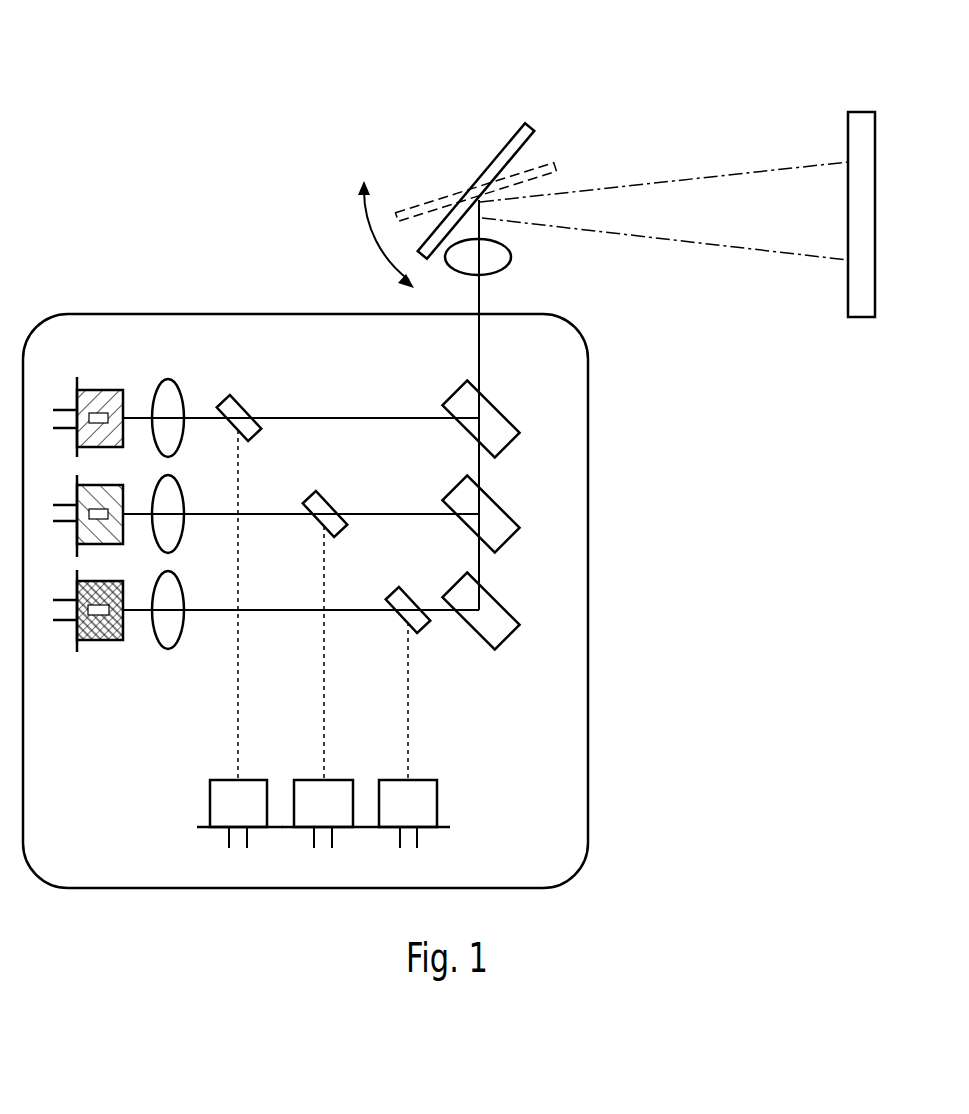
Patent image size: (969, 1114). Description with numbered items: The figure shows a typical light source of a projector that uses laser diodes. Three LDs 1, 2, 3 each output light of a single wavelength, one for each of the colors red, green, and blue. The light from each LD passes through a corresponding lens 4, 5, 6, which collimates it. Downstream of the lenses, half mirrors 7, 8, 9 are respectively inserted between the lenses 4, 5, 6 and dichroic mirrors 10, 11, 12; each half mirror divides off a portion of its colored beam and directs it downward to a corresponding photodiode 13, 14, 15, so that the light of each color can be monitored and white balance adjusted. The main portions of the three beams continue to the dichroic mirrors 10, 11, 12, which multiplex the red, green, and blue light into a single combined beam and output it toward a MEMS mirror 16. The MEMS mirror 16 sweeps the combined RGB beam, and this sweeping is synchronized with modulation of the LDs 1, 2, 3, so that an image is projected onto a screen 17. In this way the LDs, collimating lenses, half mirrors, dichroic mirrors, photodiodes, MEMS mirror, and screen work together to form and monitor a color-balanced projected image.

The LD 1 is at (113, 390).
The LD 2 is at (113, 486).
The LD 3 is at (113, 581).
The lens 4 is at (182, 395).
The lens 5 is at (182, 491).
The lens 6 is at (182, 585).
The half mirror 7 is at (243, 402).
The half mirror 8 is at (328, 502).
The half mirror 9 is at (412, 598).
The dichroic mirror 10 is at (512, 383).
The dichroic mirror 11 is at (512, 478).
The dichroic mirror 12 is at (512, 575).
The photodiode 13 is at (253, 780).
The photodiode 14 is at (338, 780).
The photodiode 15 is at (423, 780).
The MEMS mirror 16 is at (530, 126).
The screen 17 is at (862, 112).